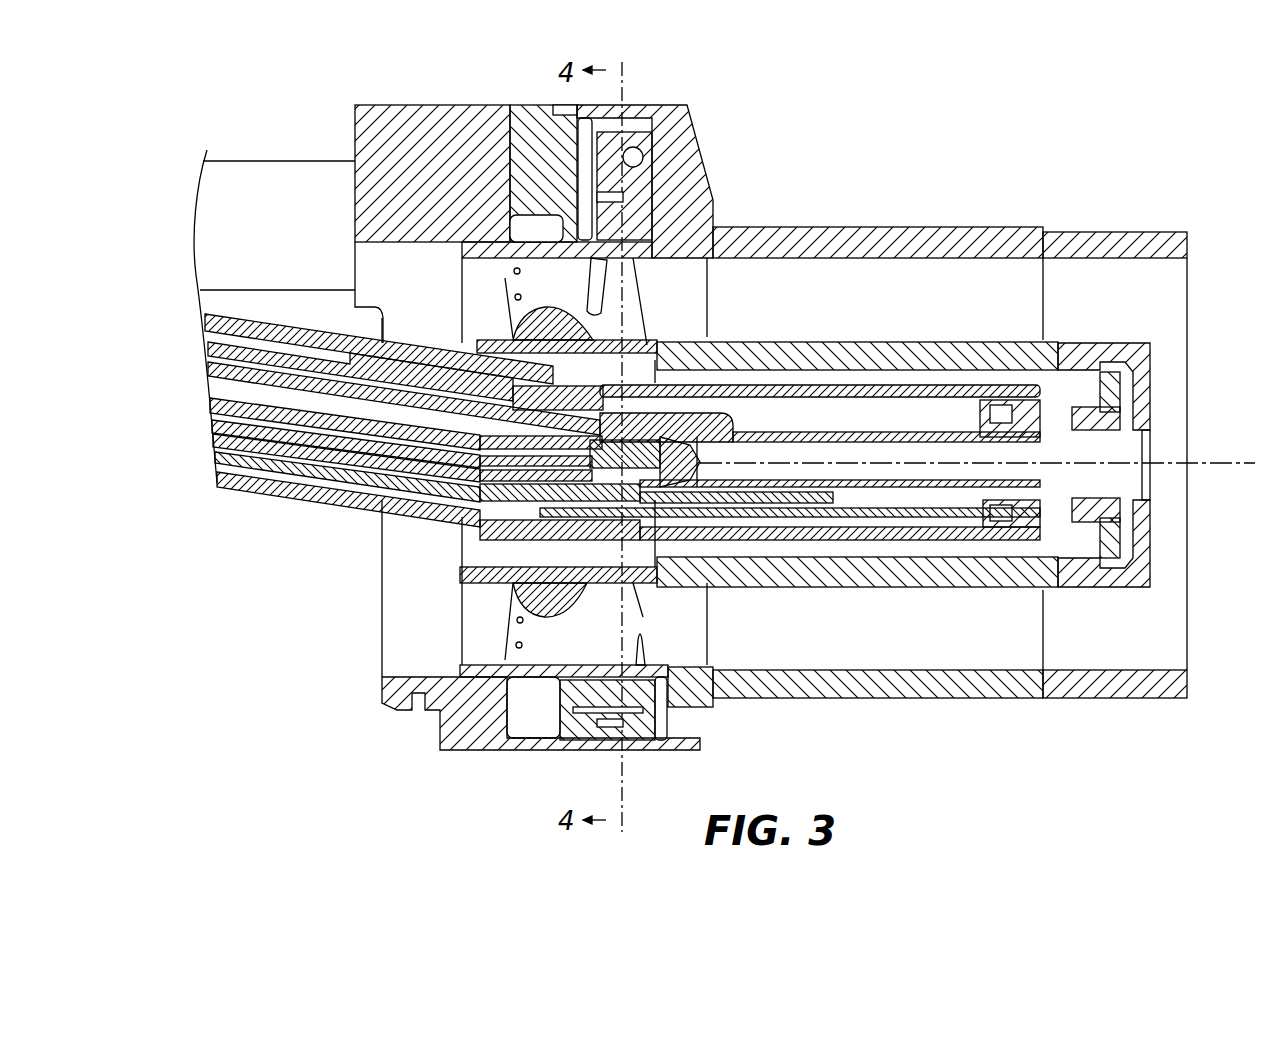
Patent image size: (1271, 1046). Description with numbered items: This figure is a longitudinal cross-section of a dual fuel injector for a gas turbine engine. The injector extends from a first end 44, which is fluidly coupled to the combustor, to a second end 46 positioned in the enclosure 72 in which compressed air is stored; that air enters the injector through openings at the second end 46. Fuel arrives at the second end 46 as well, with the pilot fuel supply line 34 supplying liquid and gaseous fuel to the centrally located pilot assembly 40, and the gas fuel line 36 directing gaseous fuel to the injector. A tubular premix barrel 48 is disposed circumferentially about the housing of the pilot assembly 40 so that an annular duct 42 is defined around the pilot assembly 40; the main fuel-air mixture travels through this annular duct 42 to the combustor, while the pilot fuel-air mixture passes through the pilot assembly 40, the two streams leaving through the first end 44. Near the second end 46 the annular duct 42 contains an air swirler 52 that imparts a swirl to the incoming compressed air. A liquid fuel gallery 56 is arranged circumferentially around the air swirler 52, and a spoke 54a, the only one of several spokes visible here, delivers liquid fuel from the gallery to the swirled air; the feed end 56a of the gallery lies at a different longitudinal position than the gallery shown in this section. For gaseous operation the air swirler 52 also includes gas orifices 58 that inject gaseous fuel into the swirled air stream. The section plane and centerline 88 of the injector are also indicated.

The pilot fuel supply line 34 is at (216, 343).
The gas fuel line 36 is at (262, 185).
The pilot assembly 40 is at (1156, 410).
The annular duct 42 is at (1172, 292).
The first end 44 is at (1233, 628).
The second end 46 is at (288, 653).
The premix barrel 48 is at (948, 238).
The air swirler 52 is at (566, 292).
The spoke 54a is at (603, 283).
The liquid fuel gallery 56 is at (672, 150).
The feed end 56a is at (634, 150).
The gas orifices 58 is at (512, 271).
The enclosure 72 is at (222, 616).
The central axis 88 is at (1207, 463).